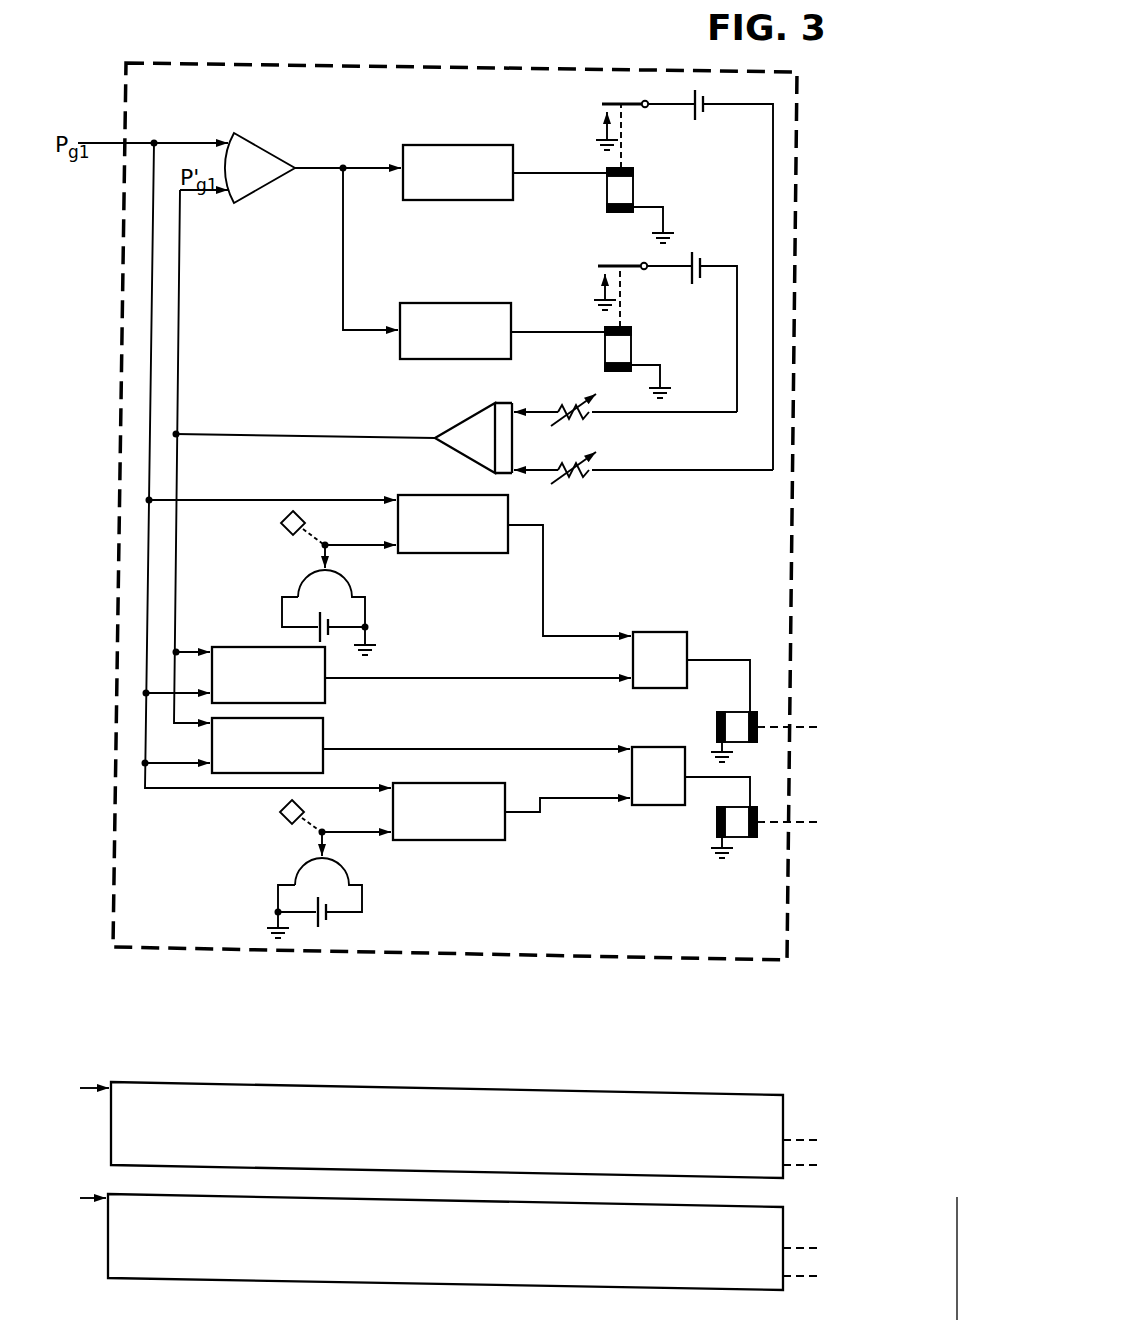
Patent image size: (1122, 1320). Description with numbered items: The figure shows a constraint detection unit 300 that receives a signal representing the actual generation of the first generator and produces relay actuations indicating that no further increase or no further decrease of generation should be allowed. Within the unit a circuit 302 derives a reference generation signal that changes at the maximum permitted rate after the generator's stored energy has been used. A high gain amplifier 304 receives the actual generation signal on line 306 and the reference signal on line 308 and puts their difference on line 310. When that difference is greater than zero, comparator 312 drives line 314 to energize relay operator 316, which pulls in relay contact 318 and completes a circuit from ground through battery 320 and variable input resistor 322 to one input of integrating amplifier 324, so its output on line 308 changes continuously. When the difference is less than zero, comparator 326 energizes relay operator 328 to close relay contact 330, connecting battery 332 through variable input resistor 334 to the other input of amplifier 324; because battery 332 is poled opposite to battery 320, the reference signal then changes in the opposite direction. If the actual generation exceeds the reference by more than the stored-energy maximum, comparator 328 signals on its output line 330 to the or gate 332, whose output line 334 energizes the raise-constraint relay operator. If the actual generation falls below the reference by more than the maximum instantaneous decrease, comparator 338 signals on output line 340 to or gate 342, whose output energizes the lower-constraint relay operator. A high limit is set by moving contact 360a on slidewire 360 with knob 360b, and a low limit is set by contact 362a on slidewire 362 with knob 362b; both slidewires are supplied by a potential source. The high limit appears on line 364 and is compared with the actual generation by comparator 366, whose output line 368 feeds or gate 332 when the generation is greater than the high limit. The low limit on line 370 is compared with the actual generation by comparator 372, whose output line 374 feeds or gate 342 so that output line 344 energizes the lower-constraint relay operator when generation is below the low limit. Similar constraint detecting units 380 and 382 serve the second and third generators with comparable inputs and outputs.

The constraint detection unit 300 is at (313, 60).
The circuit 302 is at (274, 197).
The high gain amplifier 304 is at (266, 148).
The line 306 is at (190, 143).
The line 308 is at (178, 246).
The line 310 is at (328, 171).
The comparator 312 is at (457, 145).
The line 314 is at (578, 171).
The relay operator 316 is at (636, 186).
The relay contact 318 is at (620, 102).
The battery 320 is at (702, 112).
The variable input resistor 322 is at (580, 480).
The integrating amplifier 324 is at (472, 406).
The comparator 326 is at (457, 303).
The relay operator / comparator 328 is at (636, 342).
The relay contact / output line 330 is at (621, 262).
The battery / or gate 332 is at (698, 256).
The variable input resistor / output line 334 is at (590, 422).
The comparator 338 is at (322, 720).
The output line 340 is at (476, 746).
The or gate 342 is at (660, 747).
The output line 344 is at (743, 791).
The slidewire 360 is at (302, 583).
The movable contact 360a is at (320, 561).
The adjusting knob 360b is at (283, 523).
The slidewire 362 is at (293, 869).
The contact 362a is at (318, 849).
The adjusting knob 362b is at (283, 812).
The line 364 is at (352, 550).
The comparator 366 is at (440, 495).
The output line 368 is at (546, 598).
The line 370 is at (348, 836).
The comparator 372 is at (470, 783).
The output line 374 is at (586, 799).
The constraint detecting unit 380 is at (200, 1082).
The constraint detecting unit 382 is at (138, 1194).